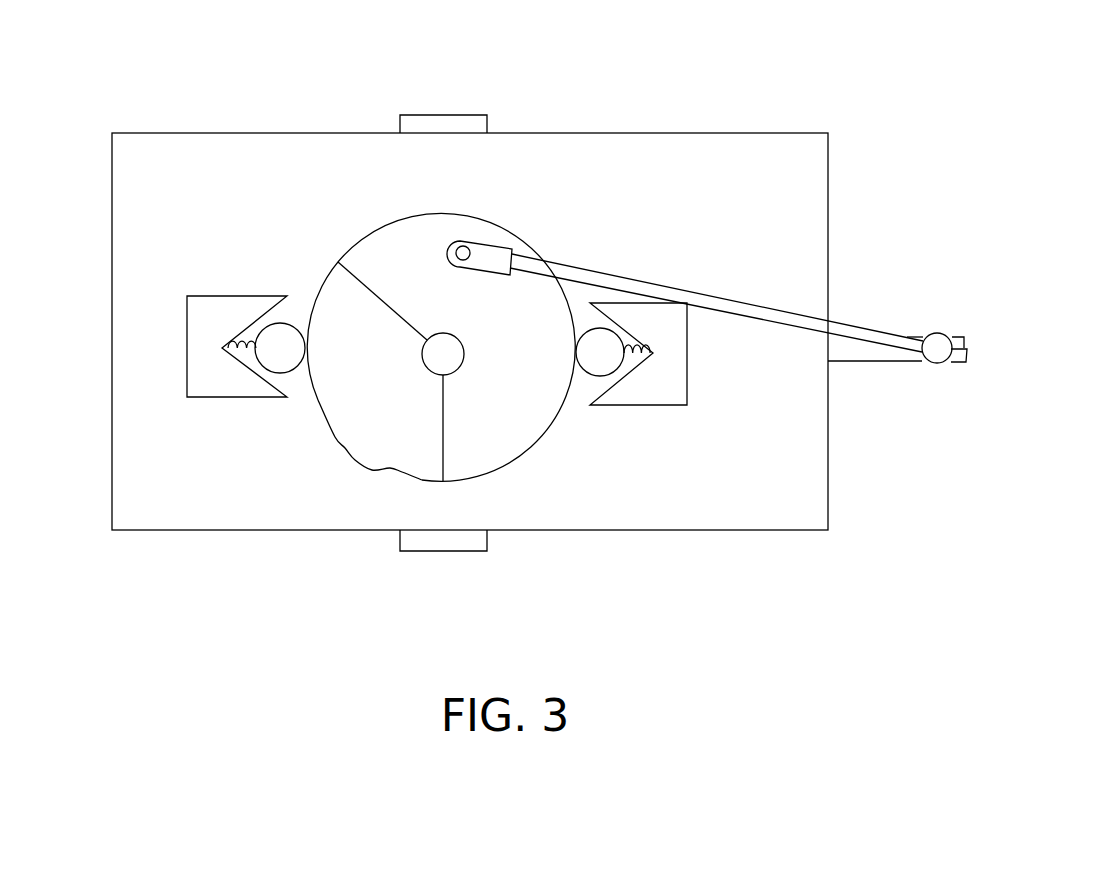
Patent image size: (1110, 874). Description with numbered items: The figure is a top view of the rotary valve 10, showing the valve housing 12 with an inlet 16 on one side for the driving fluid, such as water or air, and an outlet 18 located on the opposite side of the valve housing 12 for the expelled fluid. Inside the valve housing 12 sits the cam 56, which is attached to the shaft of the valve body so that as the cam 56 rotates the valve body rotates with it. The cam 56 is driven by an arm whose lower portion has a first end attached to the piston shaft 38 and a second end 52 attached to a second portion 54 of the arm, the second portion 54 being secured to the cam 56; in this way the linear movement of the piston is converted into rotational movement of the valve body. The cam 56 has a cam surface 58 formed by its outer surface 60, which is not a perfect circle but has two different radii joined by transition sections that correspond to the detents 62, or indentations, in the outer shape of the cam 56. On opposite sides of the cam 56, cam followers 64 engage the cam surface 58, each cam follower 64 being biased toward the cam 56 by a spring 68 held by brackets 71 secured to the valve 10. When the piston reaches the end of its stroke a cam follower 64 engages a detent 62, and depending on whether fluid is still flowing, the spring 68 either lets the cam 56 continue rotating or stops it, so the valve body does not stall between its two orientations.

The rotary valve 10 is at (877, 83).
The valve housing 12 is at (817, 183).
The inlet 16 is at (455, 114).
The outlet 18 is at (460, 551).
The piston shaft 38 is at (858, 352).
The second end 52 is at (937, 335).
The second portion 54 is at (857, 332).
The cam 56 is at (395, 252).
The cam surface 58 is at (560, 433).
The outer surface 60 is at (358, 457).
The detents 62 is at (547, 262).
The cam follower 64 is at (247, 408).
The spring 68 is at (223, 348).
The brackets 71 is at (205, 370).